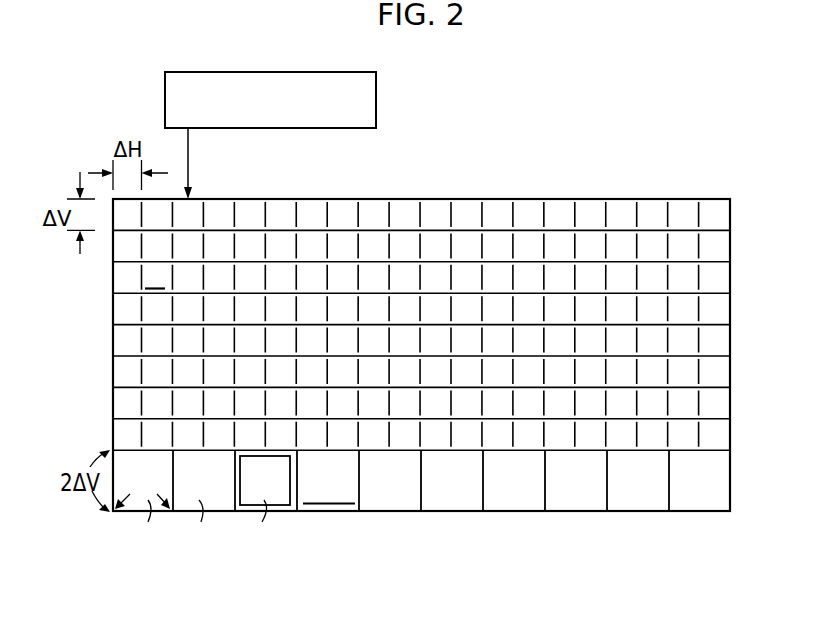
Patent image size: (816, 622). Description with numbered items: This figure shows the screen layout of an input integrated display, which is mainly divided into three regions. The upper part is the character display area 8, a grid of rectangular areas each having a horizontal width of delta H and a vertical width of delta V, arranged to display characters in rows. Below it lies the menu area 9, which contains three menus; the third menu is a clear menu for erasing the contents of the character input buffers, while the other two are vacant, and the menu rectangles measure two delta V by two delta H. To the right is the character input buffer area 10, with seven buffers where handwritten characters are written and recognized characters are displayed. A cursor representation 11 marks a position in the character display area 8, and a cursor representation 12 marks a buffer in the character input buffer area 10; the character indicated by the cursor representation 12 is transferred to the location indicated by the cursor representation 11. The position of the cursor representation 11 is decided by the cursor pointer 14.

The character display area 8 is at (735, 445).
The menu area 9 is at (113, 527).
The character input buffer area 10 is at (727, 522).
The cursor representation 11 is at (157, 283).
The cursor representation 12 is at (343, 506).
The cursor pointer 14 is at (376, 100).